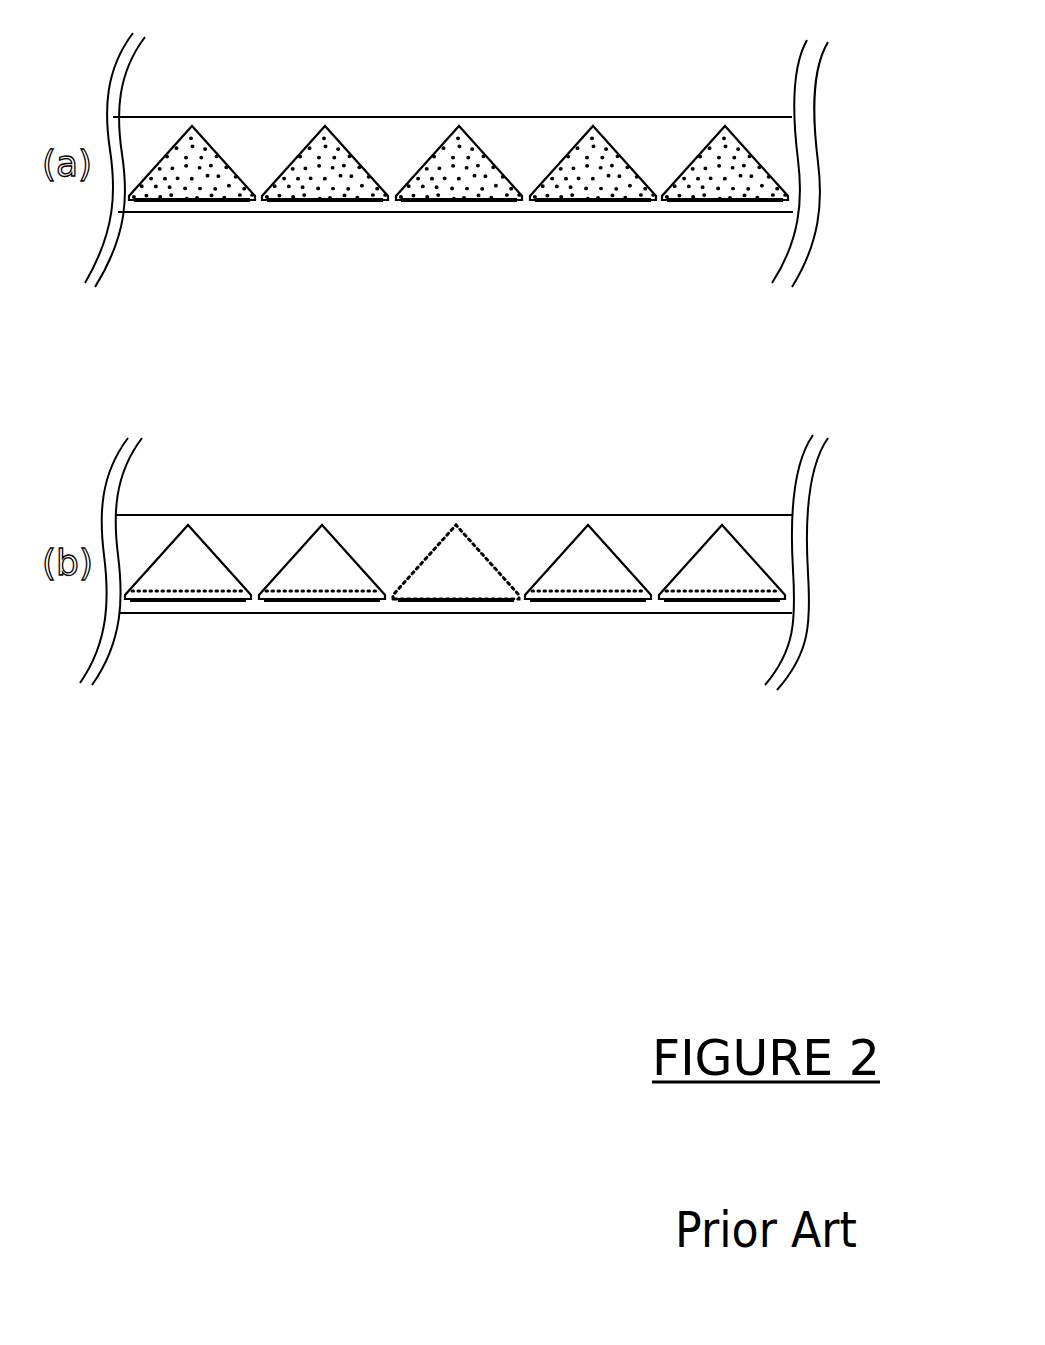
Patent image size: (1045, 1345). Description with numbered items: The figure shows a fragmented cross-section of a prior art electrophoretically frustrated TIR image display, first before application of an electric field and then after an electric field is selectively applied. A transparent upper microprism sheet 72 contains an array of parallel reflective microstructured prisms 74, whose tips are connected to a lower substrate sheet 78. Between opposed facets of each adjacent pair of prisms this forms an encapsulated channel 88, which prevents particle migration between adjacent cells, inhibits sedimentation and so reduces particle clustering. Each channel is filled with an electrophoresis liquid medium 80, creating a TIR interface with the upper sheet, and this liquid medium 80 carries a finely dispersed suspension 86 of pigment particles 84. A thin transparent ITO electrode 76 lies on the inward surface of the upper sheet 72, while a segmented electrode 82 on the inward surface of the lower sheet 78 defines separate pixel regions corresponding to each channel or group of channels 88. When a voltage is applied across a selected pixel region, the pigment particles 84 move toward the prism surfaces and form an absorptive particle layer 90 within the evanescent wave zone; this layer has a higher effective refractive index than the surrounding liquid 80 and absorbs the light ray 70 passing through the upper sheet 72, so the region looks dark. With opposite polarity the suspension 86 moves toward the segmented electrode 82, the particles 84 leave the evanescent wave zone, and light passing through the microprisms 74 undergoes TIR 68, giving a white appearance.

In FIG. 2B, the total internal reflection 68 is at (302, 447).
In FIG. 2B, the light ray 70 is at (515, 563).
In FIG. 2A, the transparent upper microprism sheet 72 is at (770, 100).
In FIG. 2B, the transparent upper microprism sheet 72 is at (755, 515).
In FIG. 2A, the reflective microstructured prisms 74 is at (413, 138).
In FIG. 2B, the reflective microstructured prisms 74 is at (453, 467).
In FIG. 2A, the ITO transparent electrode 76 is at (737, 137).
In FIG. 2B, the ITO transparent electrode 76 is at (648, 542).
In FIG. 2A, the lower substrate sheet 78 is at (750, 213).
In FIG. 2B, the lower substrate sheet 78 is at (698, 612).
In FIG. 2B, the electrophoresis liquid medium 80 is at (592, 547).
In FIG. 2A, the segmented electrode 82 is at (627, 202).
In FIG. 2B, the segmented electrode 82 is at (443, 623).
In FIG. 2A, the pigment particles 84 is at (766, 164).
In FIG. 2A, the suspension of pigment particles 86 is at (318, 177).
In FIG. 2A, the encapsulated channel 88 is at (600, 152).
In FIG. 2B, the absorptive particle layer 90 is at (413, 577).